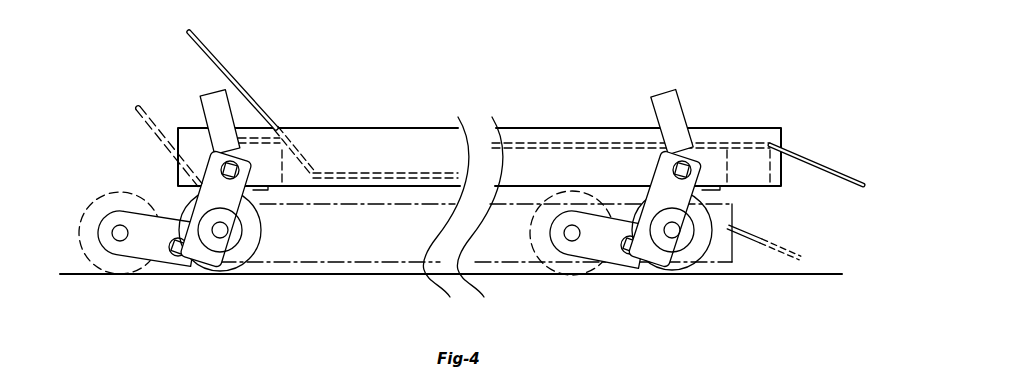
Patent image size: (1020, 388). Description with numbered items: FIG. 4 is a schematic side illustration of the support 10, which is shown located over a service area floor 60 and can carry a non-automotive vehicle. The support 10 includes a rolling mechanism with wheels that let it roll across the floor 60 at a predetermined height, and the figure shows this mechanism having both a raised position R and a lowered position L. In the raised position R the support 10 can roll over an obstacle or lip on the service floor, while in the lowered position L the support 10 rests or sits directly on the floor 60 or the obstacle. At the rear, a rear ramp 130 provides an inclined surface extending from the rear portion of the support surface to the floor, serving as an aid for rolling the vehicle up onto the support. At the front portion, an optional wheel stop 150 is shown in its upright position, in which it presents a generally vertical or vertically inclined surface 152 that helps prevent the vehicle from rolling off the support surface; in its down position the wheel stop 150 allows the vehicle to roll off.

The support 10 is at (461, 185).
The service area floor 60 is at (770, 275).
The rear ramp 130 is at (803, 150).
The wheel stop 150 is at (212, 40).
The vertically inclined surface 152 is at (236, 72).
The raised position R is at (423, 125).
The lowered position L is at (390, 266).